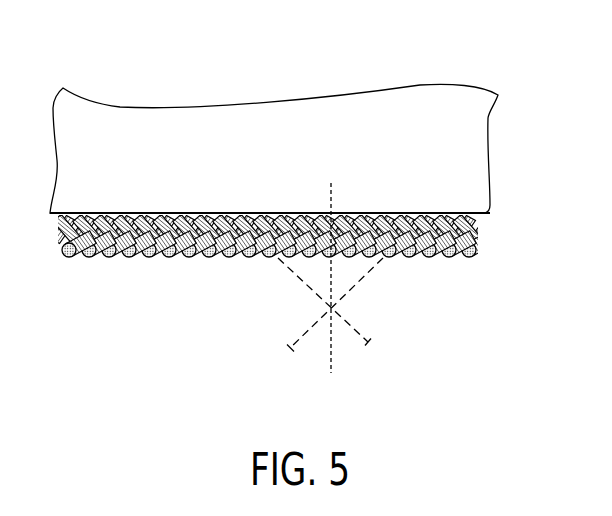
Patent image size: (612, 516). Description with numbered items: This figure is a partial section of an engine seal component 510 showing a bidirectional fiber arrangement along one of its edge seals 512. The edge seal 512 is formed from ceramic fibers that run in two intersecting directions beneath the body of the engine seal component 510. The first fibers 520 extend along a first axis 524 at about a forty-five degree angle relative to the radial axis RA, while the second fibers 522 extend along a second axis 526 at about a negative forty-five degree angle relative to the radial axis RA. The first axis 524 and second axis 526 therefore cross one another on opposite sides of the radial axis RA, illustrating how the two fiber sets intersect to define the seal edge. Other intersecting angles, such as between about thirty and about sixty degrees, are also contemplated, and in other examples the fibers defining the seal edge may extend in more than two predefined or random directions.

The engine seal component 510 is at (126, 76).
The edge seal 512 is at (482, 228).
The first fibers 520 is at (275, 213).
The second fibers 522 is at (395, 213).
The first axis 524 is at (368, 342).
The second axis 526 is at (290, 346).
The radial axis RA is at (329, 365).